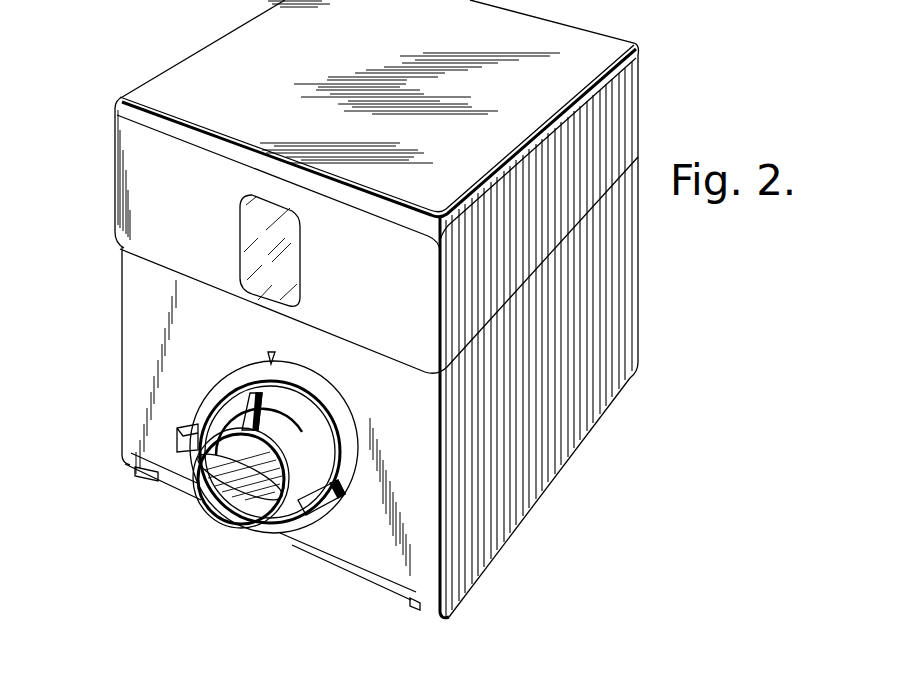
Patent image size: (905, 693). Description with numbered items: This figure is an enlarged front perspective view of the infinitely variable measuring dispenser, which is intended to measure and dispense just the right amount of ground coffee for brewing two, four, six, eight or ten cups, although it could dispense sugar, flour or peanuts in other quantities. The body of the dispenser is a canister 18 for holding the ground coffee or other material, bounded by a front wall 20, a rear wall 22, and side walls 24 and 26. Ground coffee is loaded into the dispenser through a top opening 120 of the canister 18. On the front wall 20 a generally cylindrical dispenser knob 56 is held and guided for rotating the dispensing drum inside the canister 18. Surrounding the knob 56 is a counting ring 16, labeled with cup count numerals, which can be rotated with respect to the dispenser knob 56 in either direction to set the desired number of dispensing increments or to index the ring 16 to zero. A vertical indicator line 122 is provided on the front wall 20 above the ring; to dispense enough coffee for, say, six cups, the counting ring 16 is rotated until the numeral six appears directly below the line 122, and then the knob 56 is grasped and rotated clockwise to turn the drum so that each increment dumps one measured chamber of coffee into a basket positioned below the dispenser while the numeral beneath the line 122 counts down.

The counting ring 16 is at (318, 410).
The canister 18 is at (625, 310).
The front wall 20 is at (135, 308).
The rear wall 22 is at (643, 125).
The side wall 24 is at (565, 452).
The side wall 26 is at (115, 163).
The dispenser knob 56 is at (205, 497).
The top opening 120 is at (615, 52).
The vertical indicator line 122 is at (271, 362).